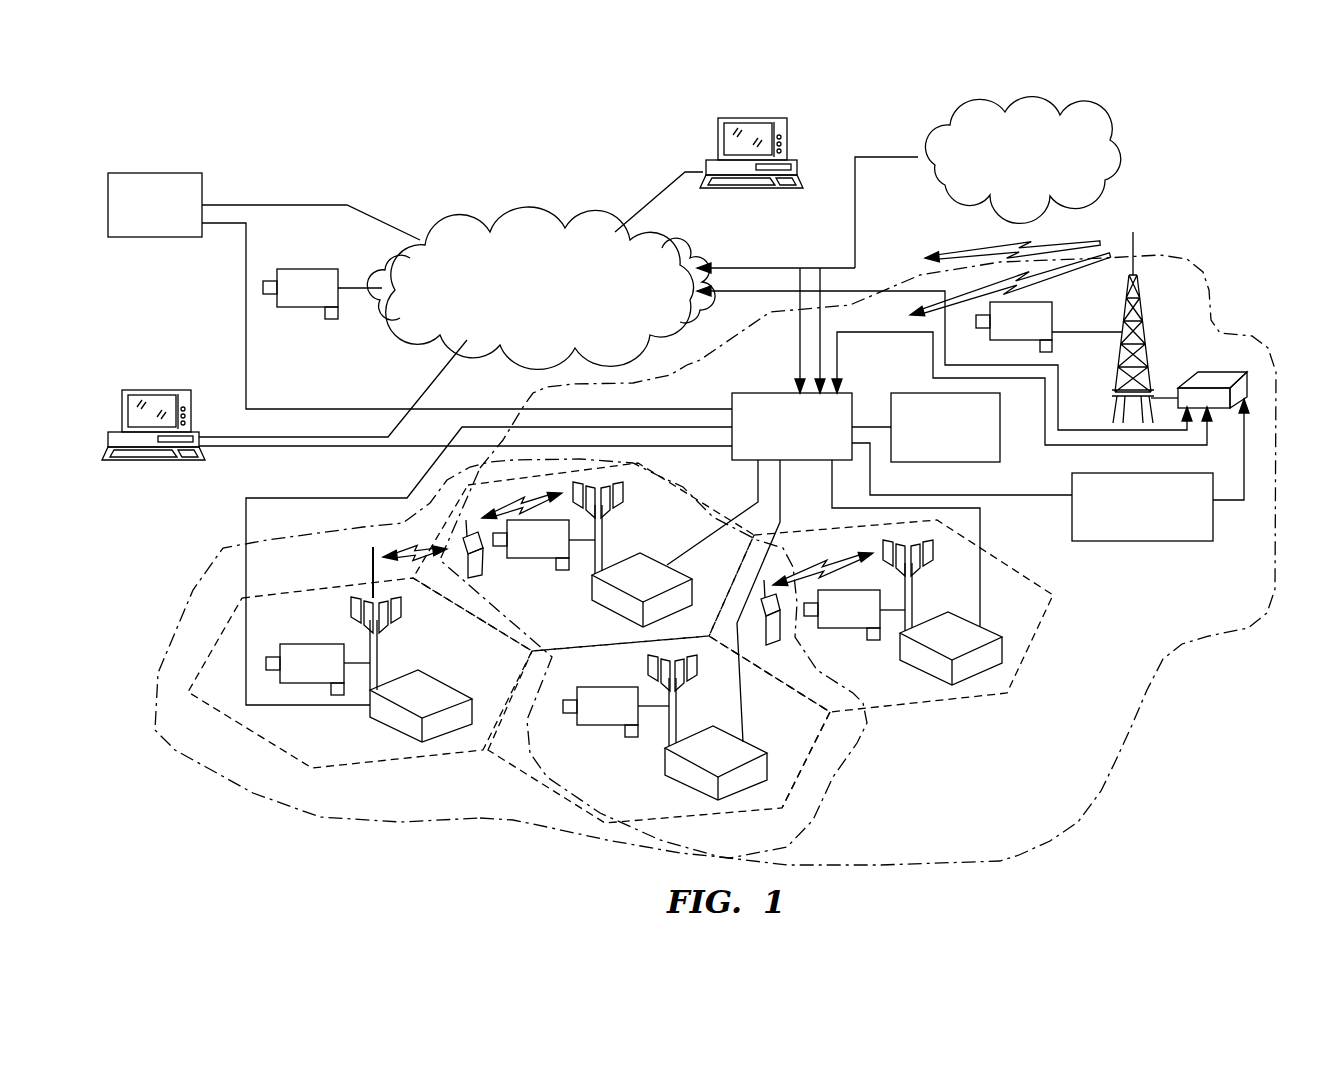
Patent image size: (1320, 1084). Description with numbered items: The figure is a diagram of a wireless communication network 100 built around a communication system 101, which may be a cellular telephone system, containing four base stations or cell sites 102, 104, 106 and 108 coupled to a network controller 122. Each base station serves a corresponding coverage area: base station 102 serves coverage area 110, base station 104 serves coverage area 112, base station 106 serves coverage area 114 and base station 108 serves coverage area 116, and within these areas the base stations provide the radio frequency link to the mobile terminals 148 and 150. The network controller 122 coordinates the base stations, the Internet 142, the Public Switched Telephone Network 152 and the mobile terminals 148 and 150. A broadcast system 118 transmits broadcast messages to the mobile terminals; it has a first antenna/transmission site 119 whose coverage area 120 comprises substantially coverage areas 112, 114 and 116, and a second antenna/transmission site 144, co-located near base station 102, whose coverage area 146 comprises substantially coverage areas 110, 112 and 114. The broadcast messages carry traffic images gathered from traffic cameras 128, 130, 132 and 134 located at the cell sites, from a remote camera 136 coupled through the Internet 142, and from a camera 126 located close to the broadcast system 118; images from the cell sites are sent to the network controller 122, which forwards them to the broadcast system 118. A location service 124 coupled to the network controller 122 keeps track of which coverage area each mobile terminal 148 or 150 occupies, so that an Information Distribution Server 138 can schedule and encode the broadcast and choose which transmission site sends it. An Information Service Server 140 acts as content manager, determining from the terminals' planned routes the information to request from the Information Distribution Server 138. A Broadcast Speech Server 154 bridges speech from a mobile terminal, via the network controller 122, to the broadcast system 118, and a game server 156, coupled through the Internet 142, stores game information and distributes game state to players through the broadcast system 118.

The wireless communication network 100 is at (379, 860).
The communication system 101 is at (920, 757).
The base station 102 is at (378, 660).
The base station 104 is at (602, 541).
The base station 106 is at (680, 712).
The base station 108 is at (916, 597).
The coverage area 110 is at (353, 749).
The coverage area 112 is at (588, 634).
The coverage area 114 is at (642, 807).
The coverage area 116 is at (903, 692).
The broadcast system 118 is at (1195, 348).
The first antenna/transmission site 119 is at (1150, 302).
The coverage area 120 is at (1005, 832).
The network controller 122 is at (771, 393).
The location service 124 is at (906, 391).
The camera 126 is at (1052, 312).
The traffic camera 128 is at (297, 644).
The traffic camera 130 is at (540, 570).
The traffic camera 132 is at (592, 737).
The traffic camera 134 is at (845, 641).
The camera 136 is at (312, 269).
The Information Distribution Server 138 is at (173, 390).
The Information Service Server 140 is at (787, 133).
The Internet 142 is at (556, 228).
The second antenna/transmission site 144 is at (371, 562).
The coverage area 146 is at (475, 802).
The mobile terminal 148 is at (470, 577).
The mobile terminal 150 is at (775, 646).
The Public Switched Telephone Network 152 is at (1120, 150).
The Broadcast Speech Server 154 is at (1160, 541).
The game server 156 is at (178, 173).